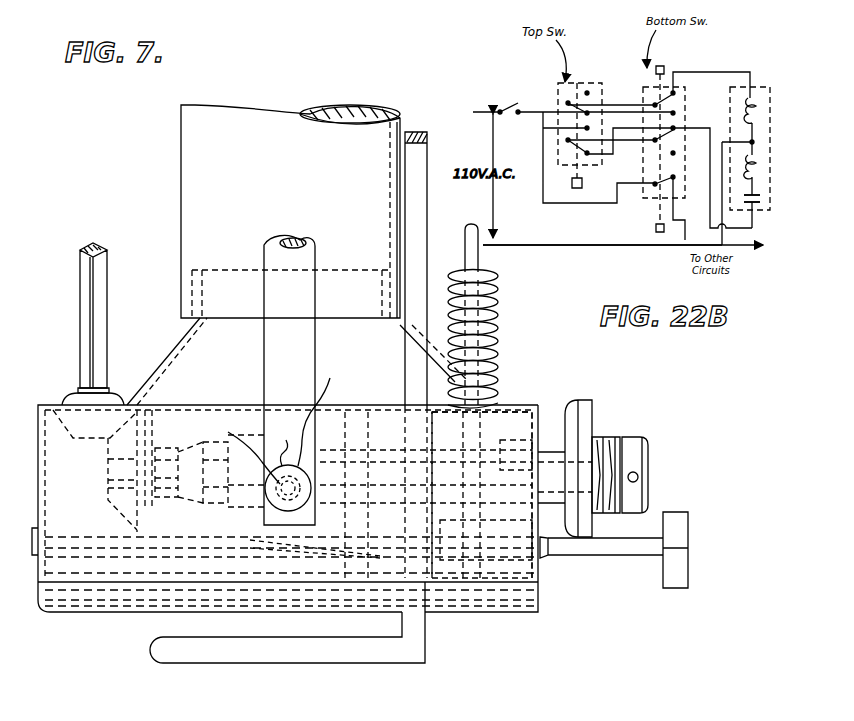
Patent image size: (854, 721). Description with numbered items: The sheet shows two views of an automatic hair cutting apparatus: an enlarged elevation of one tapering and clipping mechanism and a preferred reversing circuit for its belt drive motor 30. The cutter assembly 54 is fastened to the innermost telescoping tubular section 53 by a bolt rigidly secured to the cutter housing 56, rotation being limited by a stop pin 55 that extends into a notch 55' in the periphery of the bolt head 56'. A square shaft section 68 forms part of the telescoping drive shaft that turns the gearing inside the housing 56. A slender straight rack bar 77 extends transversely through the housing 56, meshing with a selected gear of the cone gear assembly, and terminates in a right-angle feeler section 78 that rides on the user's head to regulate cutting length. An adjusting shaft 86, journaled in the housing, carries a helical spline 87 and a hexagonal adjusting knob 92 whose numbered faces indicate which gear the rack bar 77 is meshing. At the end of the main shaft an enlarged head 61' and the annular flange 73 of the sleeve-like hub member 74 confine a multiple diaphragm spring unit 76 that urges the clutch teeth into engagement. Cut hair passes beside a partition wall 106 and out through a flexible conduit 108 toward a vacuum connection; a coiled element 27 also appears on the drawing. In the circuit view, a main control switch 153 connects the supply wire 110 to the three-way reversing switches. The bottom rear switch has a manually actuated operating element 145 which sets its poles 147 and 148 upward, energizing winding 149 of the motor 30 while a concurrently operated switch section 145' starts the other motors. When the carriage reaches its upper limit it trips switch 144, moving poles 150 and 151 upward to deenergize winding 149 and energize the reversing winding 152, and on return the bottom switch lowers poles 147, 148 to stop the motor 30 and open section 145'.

In FIG. 7, the cutter assembly 54 is at (68, 614).
In FIG. 7, the feeler section 78 is at (200, 665).
In FIG. 7, the flexible conduit 108 is at (183, 145).
In FIG. 7, the square section of shaft assembly 68 is at (103, 324).
In FIG. 7, the innermost tubular section 53 is at (318, 258).
In FIG. 7, the coil wire 27 is at (466, 250).
In FIG. 7, the straight rack bar 77 is at (404, 389).
In FIG. 7, the stop pin 55 is at (288, 465).
In FIG. 7, the notch 55' is at (307, 233).
In FIG. 7, the head of bolt 56' is at (239, 452).
In FIG. 7, the helical spline 87 is at (378, 556).
In FIG. 7, the sleeve-like hub member 74 is at (553, 452).
In FIG. 7, the annular flange 73 is at (584, 402).
In FIG. 7, the multiple diaphragm spring unit 76 is at (608, 437).
In FIG. 7, the enlarged head 61' is at (654, 457).
In FIG. 7, the adjusting shaft 86 is at (598, 552).
In FIG. 7, the hexagonal adjusting knob 92 is at (689, 575).
In FIG. 7, the cutter housing 56 is at (490, 471).
In FIG. 22b, the three-way reversing switch 144 is at (602, 83).
In FIG. 22b, the main control switch 153 is at (508, 108).
In FIG. 22b, the pole of switch 150 is at (566, 103).
In FIG. 22b, the pole of switch 151 is at (568, 142).
In FIG. 22b, the partition wall 106 is at (642, 96).
In FIG. 22b, the pole of switch 147 is at (680, 103).
In FIG. 22b, the pole of switch 148 is at (680, 135).
In FIG. 22b, the switch section 145' is at (642, 171).
In FIG. 22b, the operating element 145 is at (634, 218).
In FIG. 22b, the winding 149 is at (760, 96).
In FIG. 22b, the reversing winding 152 is at (762, 168).
In FIG. 22b, the motor 30 is at (762, 214).
In FIG. 22b, the supply wire 110 is at (682, 256).